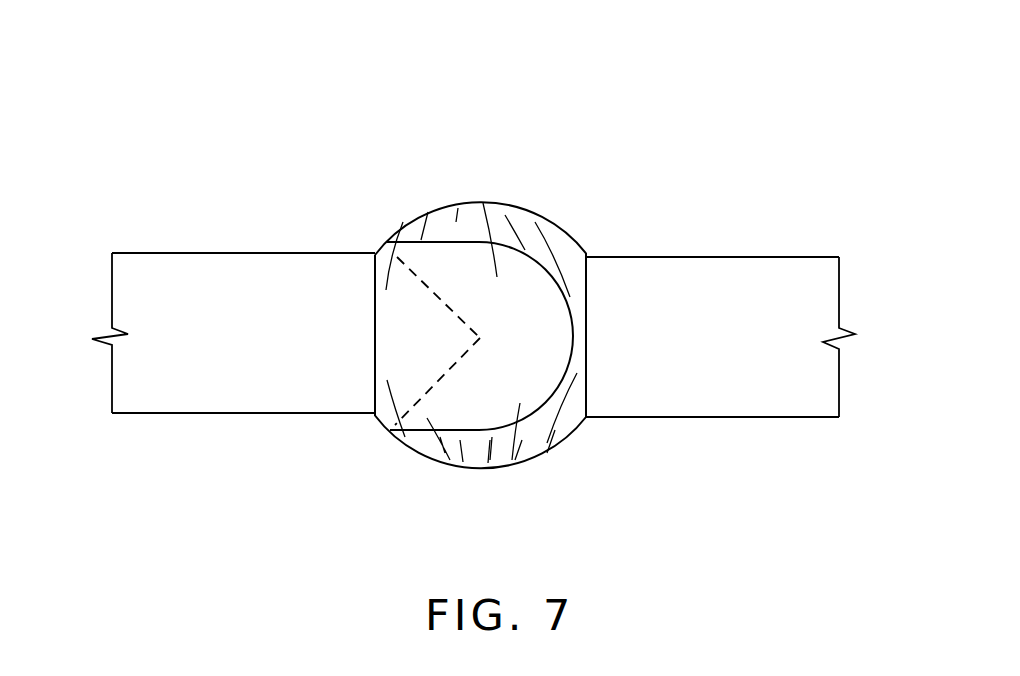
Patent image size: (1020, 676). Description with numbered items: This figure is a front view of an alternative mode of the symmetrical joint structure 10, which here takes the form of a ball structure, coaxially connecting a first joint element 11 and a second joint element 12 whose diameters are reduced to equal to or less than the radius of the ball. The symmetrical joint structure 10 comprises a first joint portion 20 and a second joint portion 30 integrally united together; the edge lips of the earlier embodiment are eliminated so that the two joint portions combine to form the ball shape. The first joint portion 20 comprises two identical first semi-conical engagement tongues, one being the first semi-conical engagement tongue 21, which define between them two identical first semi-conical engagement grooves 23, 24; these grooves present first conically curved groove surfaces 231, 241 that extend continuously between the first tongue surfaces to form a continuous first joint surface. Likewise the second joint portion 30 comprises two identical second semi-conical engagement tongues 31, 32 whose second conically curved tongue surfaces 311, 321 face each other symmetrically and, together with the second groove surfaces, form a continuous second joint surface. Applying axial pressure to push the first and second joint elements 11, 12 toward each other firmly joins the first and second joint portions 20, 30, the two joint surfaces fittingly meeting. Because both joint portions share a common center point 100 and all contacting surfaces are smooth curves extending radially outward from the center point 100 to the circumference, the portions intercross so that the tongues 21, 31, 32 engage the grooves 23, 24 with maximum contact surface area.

The symmetrical joint structure 10 is at (640, 178).
The first joint element 11 is at (190, 398).
The second joint element 12 is at (778, 400).
The first joint portion 20 is at (379, 425).
The first semi-conical engagement tongue 21 is at (533, 290).
The first semi-conical engagement groove 23 is at (412, 236).
The first semi-conical engagement groove 24 is at (407, 440).
The second joint portion 30 is at (586, 436).
The second semi-conical engagement tongue 31 is at (528, 442).
The second semi-conical engagement tongue 32 is at (447, 227).
The center point 100 is at (485, 348).
The first conically curved groove surface 231 is at (407, 275).
The first conically curved groove surface 241 is at (412, 387).
The second conically curved tongue surface 311 is at (447, 388).
The second conically curved tongue surface 321 is at (436, 276).